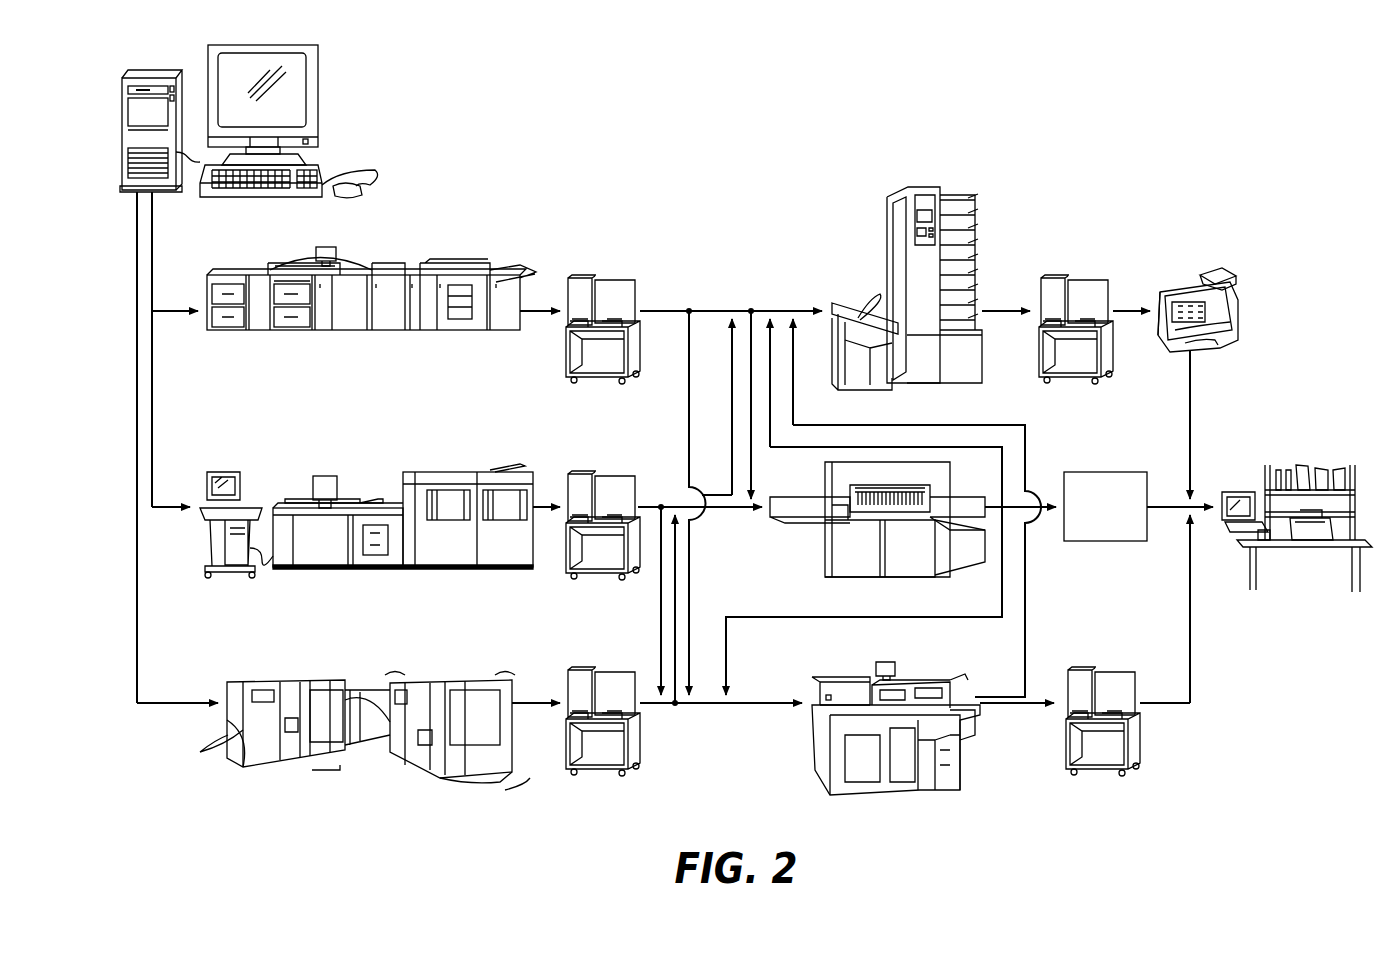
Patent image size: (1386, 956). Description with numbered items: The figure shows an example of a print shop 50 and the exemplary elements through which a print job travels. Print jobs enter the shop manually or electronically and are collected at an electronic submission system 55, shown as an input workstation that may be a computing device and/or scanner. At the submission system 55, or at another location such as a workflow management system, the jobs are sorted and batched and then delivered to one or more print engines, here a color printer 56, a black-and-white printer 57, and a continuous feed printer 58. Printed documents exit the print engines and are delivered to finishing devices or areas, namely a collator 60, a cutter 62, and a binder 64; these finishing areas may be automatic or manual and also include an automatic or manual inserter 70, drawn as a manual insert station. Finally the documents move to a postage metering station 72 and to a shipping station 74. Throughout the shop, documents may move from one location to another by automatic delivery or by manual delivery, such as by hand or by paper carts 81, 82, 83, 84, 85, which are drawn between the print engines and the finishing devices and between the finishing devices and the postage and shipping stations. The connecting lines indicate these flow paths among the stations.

The print shop 50 is at (1122, 64).
The electronic submission system 55 is at (318, 102).
The color printer 56 is at (437, 262).
The black-and-white printer 57 is at (437, 475).
The continuous feed printer 58 is at (438, 682).
The collator 60 is at (888, 232).
The cutter 62 is at (827, 543).
The binder 64 is at (825, 732).
The inserter 70 is at (1102, 472).
The postage metering station 72 is at (1210, 282).
The shipping station 74 is at (1262, 493).
The paper cart 81 is at (593, 282).
The paper cart 82 is at (588, 473).
The paper cart 83 is at (612, 677).
The paper cart 84 is at (1063, 277).
The paper cart 85 is at (1088, 681).